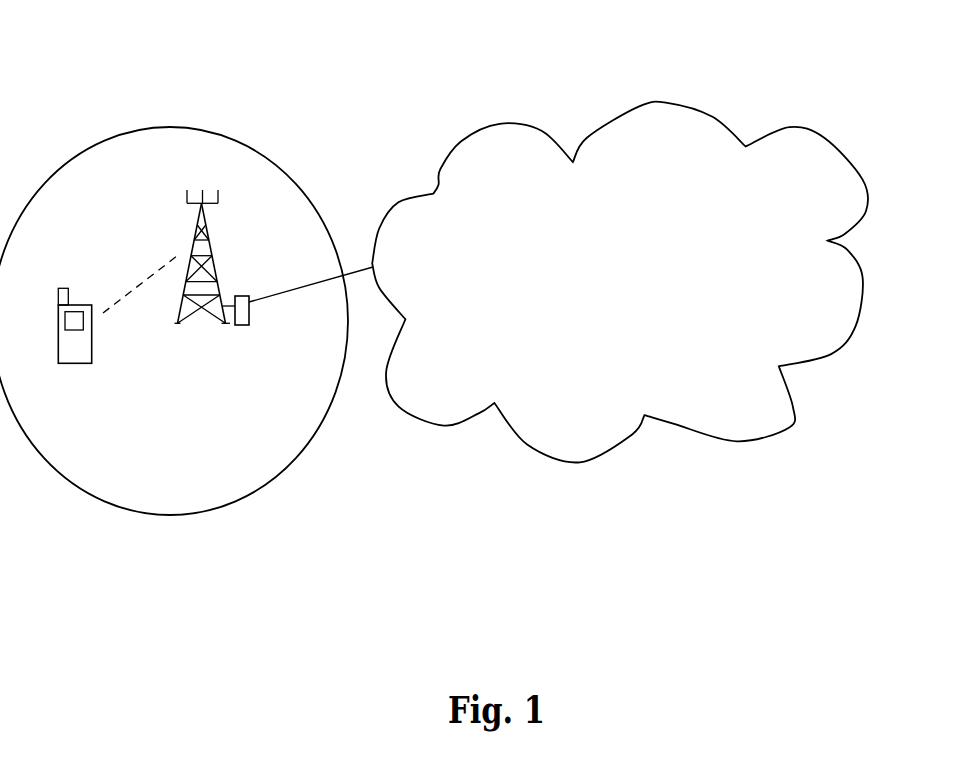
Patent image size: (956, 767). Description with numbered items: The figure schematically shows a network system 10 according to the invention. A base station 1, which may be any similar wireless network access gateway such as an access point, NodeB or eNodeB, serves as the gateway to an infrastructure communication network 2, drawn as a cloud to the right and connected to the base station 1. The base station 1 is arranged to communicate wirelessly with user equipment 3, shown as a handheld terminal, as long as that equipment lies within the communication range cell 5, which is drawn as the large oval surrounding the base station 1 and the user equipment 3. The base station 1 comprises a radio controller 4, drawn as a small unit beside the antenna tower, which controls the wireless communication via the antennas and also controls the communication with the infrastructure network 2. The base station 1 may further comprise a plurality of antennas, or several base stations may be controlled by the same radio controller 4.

The base station 1 is at (212, 250).
The infrastructure communication network 2 is at (457, 145).
The user equipment 3 is at (87, 305).
The radio controller 4 is at (242, 327).
The communication range cell 5 is at (277, 478).
The communication system 10 is at (363, 420).